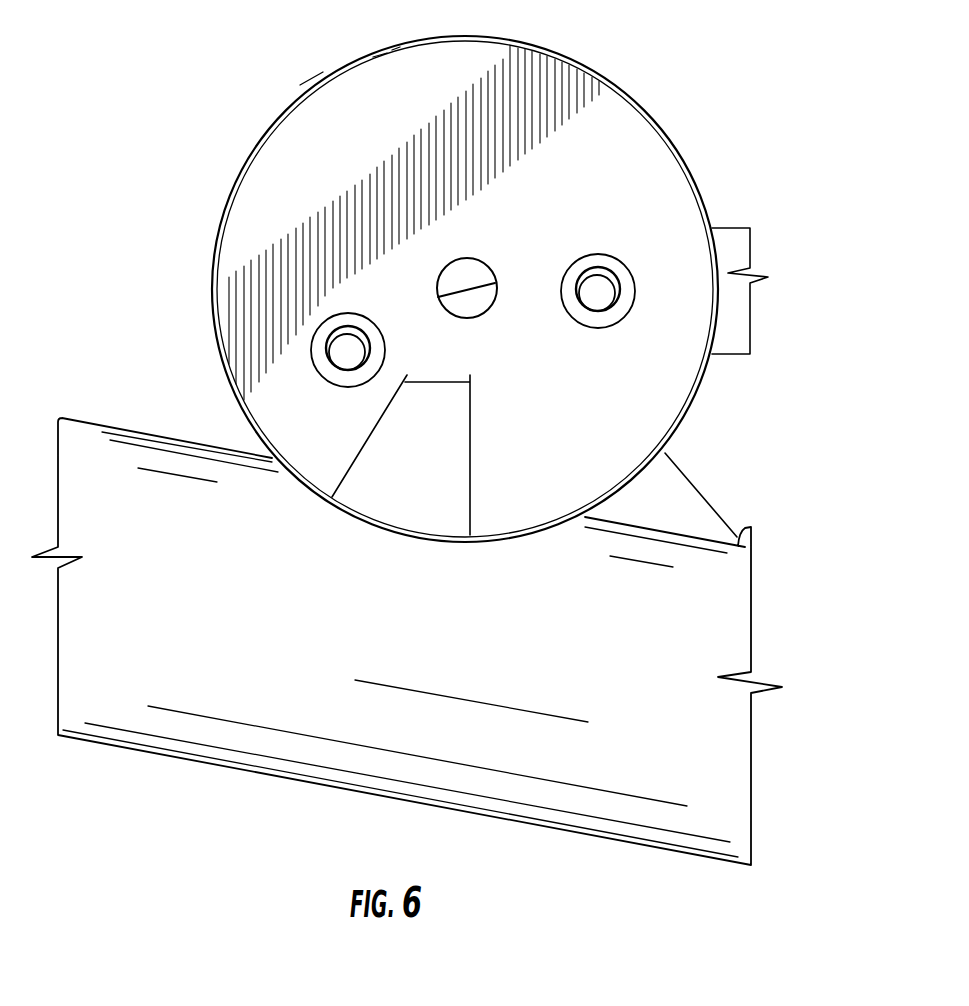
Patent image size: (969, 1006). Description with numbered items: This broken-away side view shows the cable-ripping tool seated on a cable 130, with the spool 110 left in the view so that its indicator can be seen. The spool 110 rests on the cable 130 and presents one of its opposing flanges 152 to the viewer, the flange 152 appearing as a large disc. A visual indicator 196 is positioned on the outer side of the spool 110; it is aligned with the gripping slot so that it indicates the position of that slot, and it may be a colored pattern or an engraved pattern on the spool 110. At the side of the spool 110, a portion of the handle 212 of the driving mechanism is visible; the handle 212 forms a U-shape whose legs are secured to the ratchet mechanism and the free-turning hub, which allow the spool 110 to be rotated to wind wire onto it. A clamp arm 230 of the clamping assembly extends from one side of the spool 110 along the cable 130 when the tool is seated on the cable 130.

The spool 110 is at (585, 64).
The flange 152 is at (408, 63).
The handle 212 is at (735, 225).
The visual indicator 196 is at (468, 450).
The clamp arm 230 is at (698, 492).
The cable 130 is at (136, 750).